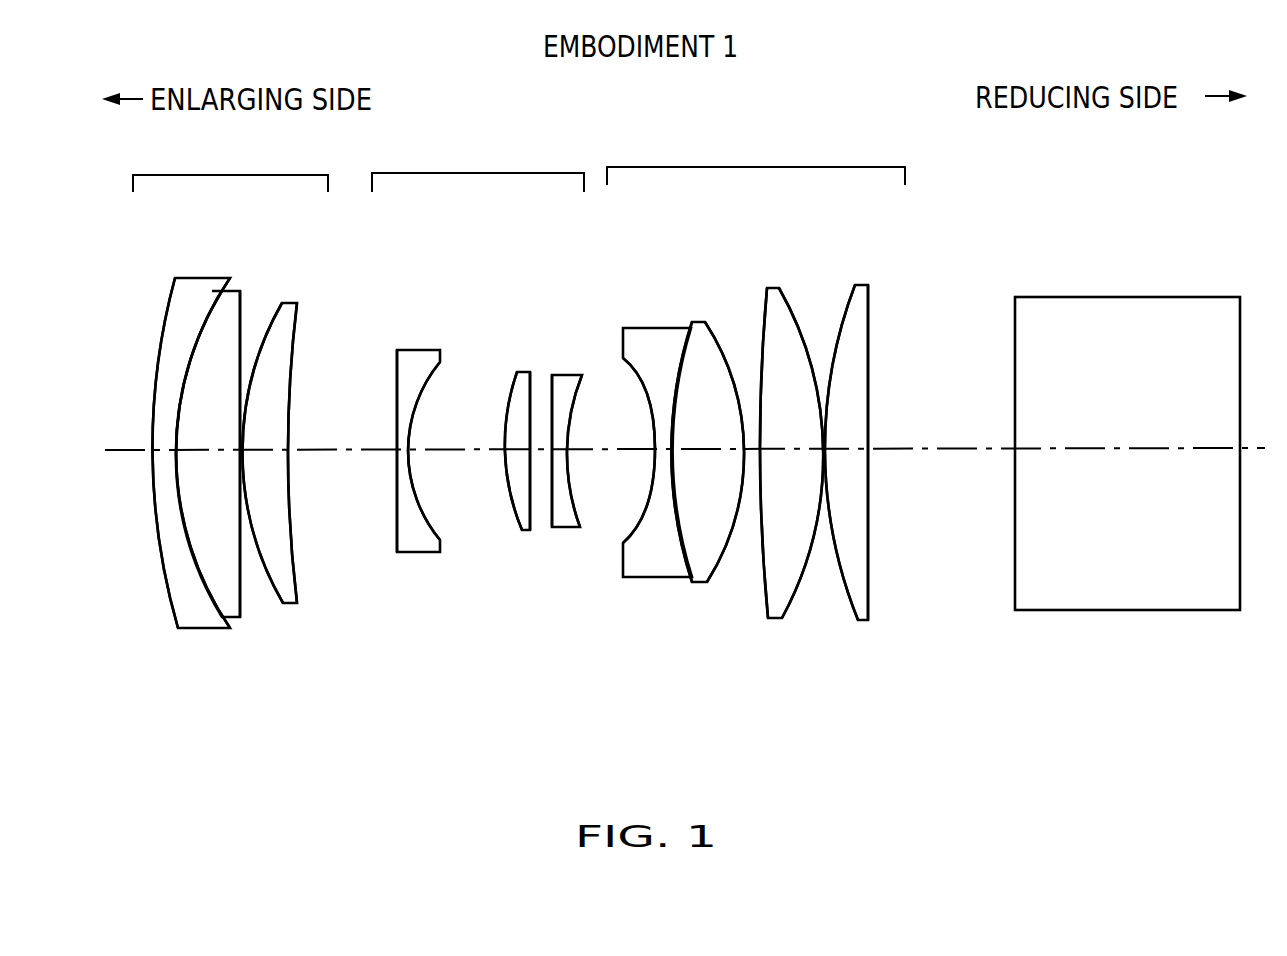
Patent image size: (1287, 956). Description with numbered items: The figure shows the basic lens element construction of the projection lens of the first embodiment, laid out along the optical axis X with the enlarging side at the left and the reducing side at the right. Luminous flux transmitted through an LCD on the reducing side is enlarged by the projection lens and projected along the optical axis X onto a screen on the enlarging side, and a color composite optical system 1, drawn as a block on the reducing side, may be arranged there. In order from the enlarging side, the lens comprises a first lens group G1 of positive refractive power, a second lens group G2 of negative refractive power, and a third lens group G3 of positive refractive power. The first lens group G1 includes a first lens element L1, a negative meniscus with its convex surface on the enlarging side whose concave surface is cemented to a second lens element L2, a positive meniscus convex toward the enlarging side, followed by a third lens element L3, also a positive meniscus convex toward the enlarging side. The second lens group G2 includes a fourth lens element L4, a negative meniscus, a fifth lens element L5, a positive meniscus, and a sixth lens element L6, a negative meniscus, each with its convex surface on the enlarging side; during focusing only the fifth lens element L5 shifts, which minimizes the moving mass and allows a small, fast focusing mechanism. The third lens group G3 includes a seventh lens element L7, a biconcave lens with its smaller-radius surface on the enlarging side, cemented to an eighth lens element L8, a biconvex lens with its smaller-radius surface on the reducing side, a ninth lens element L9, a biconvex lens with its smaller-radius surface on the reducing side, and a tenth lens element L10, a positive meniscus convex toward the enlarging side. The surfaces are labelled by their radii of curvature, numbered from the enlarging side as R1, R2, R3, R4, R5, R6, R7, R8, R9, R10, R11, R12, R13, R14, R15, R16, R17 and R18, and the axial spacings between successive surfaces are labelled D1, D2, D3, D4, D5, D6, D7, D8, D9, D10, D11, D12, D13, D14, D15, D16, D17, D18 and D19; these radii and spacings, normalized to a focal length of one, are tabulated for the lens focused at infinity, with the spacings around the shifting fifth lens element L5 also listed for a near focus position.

The color composite optical system 1 is at (1097, 597).
The optical axis X is at (132, 453).
The first lens group G1 is at (230, 162).
The second lens group G2 is at (478, 163).
The third lens group G3 is at (756, 155).
The first lens element L1 is at (188, 608).
The second lens element L2 is at (237, 597).
The third lens element L3 is at (287, 580).
The fourth lens element L4 is at (420, 547).
The fifth lens element L5 is at (525, 530).
The sixth lens element L6 is at (573, 530).
The seventh lens element L7 is at (652, 565).
The eighth lens element L8 is at (705, 572).
The ninth lens element L9 is at (780, 598).
The tenth lens element L10 is at (860, 603).
The radius of curvature of lens surface 1 R1 is at (167, 313).
The radius of curvature of lens surface 2 R2 is at (215, 303).
The radius of curvature of lens surface 3 R3 is at (249, 293).
The radius of curvature of lens surface 4 R4 is at (271, 307).
The radius of curvature of lens surface 5 R5 is at (298, 320).
The radius of curvature of lens surface 6 R6 is at (397, 363).
The radius of curvature of lens surface 7 R7 is at (440, 370).
The radius of curvature of lens surface 8 R8 is at (513, 372).
The radius of curvature of lens surface 9 R9 is at (535, 372).
The radius of curvature of lens surface 10 R10 is at (550, 373).
The radius of curvature of lens surface 11 R11 is at (585, 372).
The radius of curvature of lens surface 12 R12 is at (637, 375).
The radius of curvature of lens surface 13 R13 is at (677, 360).
The radius of curvature of lens surface 14 R14 is at (705, 330).
The radius of curvature of lens surface 15 R15 is at (763, 323).
The radius of curvature of lens surface 16 R16 is at (800, 325).
The radius of curvature of lens surface 17 R17 is at (842, 310).
The radius of curvature of lens surface 18 R18 is at (870, 348).
The axial spacing 1 D1 is at (166, 448).
The axial spacing 2 D2 is at (205, 448).
The axial spacing 3 D3 is at (244, 448).
The axial spacing 4 D4 is at (262, 453).
The axial spacing 5 D5 is at (345, 448).
The axial spacing 6 D6 is at (404, 442).
The axial spacing 7 D7 is at (455, 452).
The axial spacing 8 D8 is at (517, 448).
The axial spacing 9 D9 is at (541, 453).
The axial spacing 10 D10 is at (558, 453).
The axial spacing 11 D11 is at (612, 448).
The axial spacing 12 D12 is at (667, 448).
The axial spacing 13 D13 is at (689, 452).
The axial spacing 14 D14 is at (748, 448).
The axial spacing 15 D15 is at (779, 452).
The axial spacing 16 D16 is at (828, 447).
The axial spacing 17 D17 is at (842, 452).
The axial spacing 18 D18 is at (957, 448).
The axial spacing 19 D19 is at (1121, 448).